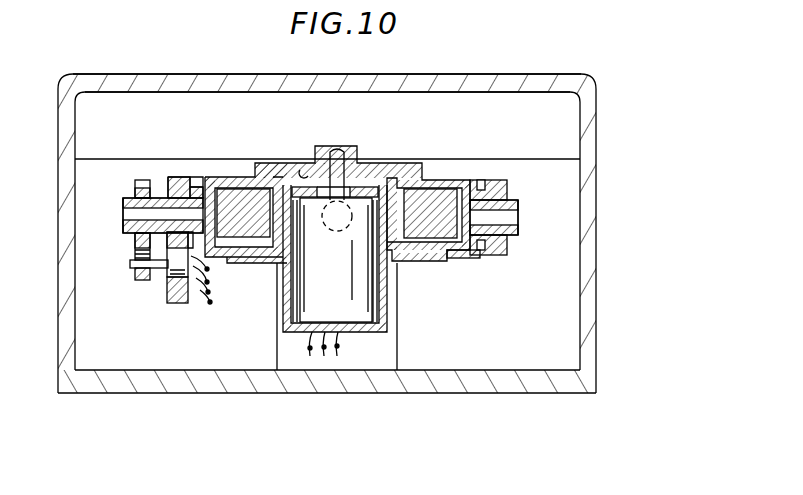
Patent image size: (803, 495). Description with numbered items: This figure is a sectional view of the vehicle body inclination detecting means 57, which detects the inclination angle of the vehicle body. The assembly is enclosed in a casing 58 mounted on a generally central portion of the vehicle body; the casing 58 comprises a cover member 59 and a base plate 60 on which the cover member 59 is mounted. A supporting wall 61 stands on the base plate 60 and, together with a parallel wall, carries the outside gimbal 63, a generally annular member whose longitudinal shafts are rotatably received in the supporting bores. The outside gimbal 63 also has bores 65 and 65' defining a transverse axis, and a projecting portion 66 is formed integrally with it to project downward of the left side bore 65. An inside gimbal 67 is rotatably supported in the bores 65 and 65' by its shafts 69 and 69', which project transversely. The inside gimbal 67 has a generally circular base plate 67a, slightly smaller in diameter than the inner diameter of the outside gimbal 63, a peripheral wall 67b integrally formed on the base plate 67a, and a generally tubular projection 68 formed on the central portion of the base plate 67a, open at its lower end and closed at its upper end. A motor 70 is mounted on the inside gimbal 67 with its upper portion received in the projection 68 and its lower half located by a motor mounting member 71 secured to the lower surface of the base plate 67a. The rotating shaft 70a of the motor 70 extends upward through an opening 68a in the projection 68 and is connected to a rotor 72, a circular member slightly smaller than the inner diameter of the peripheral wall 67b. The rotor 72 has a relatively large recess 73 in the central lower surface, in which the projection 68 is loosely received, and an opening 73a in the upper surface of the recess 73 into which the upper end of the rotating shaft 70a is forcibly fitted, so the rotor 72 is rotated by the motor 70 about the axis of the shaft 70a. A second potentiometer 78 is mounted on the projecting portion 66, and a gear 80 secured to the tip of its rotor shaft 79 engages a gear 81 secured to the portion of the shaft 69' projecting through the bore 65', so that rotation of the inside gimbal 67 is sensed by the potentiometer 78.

The vehicle body inclination detecting means 57 is at (363, 235).
The casing 58 is at (596, 130).
The cover member 59 is at (520, 80).
The base plate 60 is at (513, 394).
The supporting wall 61 is at (392, 346).
The outside gimbal 63 is at (181, 186).
The bore 65 is at (163, 172).
The bore 65' is at (511, 204).
The projecting portion 66 is at (179, 304).
The inside gimbal 67 is at (472, 257).
The base plate 67a is at (450, 258).
The peripheral wall 67b is at (481, 181).
The tubular projection 68 is at (378, 184).
The opening 68a is at (358, 188).
The shaft 69 is at (104, 204).
The shaft 69' is at (533, 236).
The motor 70 is at (303, 277).
The rotating shaft 70a is at (338, 149).
The motor mounting member 71 is at (287, 314).
The rotor 72 is at (431, 196).
The recess 73 is at (256, 177).
The opening 73a is at (305, 174).
The second potentiometer 78 is at (166, 276).
The rotor shaft 79 is at (131, 264).
The gear 80 is at (141, 282).
The gear 81 is at (137, 188).